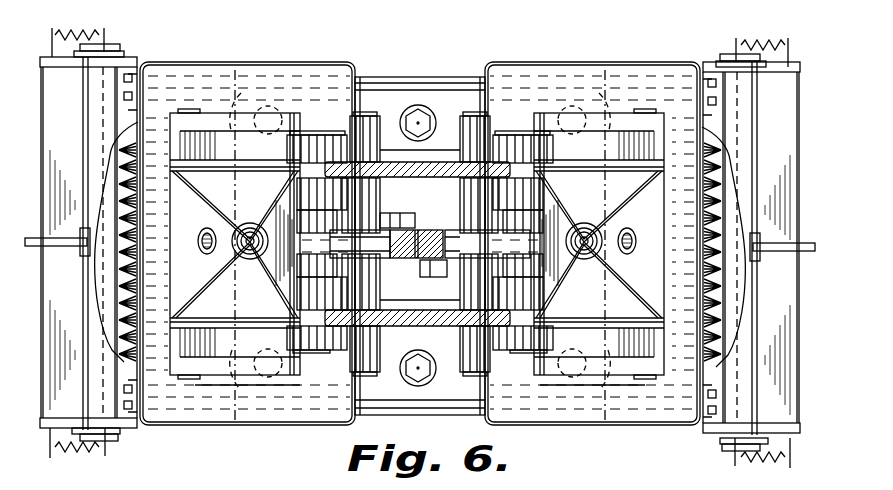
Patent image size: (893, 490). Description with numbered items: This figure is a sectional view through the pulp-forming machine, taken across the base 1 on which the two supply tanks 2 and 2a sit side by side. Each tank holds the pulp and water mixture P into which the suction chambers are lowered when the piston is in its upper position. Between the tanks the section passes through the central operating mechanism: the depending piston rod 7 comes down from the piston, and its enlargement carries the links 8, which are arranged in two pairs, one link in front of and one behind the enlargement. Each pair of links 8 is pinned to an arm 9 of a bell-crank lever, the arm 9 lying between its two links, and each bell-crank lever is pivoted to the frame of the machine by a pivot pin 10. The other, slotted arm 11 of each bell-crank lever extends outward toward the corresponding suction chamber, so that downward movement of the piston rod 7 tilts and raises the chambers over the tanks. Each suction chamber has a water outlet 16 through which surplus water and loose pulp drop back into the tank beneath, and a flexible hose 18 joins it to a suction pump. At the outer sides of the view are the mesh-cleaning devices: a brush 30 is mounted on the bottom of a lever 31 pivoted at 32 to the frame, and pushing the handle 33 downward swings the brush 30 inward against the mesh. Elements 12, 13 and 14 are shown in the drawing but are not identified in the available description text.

The base 1 is at (403, 80).
The supply tank 2 is at (285, 64).
The supply tank 2a is at (593, 66).
The piston rod 7 is at (418, 260).
The link 8 is at (388, 212).
The arm 9 is at (430, 244).
The pivot pin 10 is at (318, 150).
The arm 11 is at (363, 118).
The chassis frame 12 is at (212, 128).
The cross bar 13 is at (368, 112).
The bracket tab 14 is at (186, 109).
The water outlet 16 is at (251, 245).
The flexible hose 18 is at (627, 252).
The brush 30 is at (120, 288).
The lever 31 is at (107, 50).
The pivot 32 is at (84, 125).
The handle 33 is at (64, 244).
The pulp and water mixture P is at (200, 397).